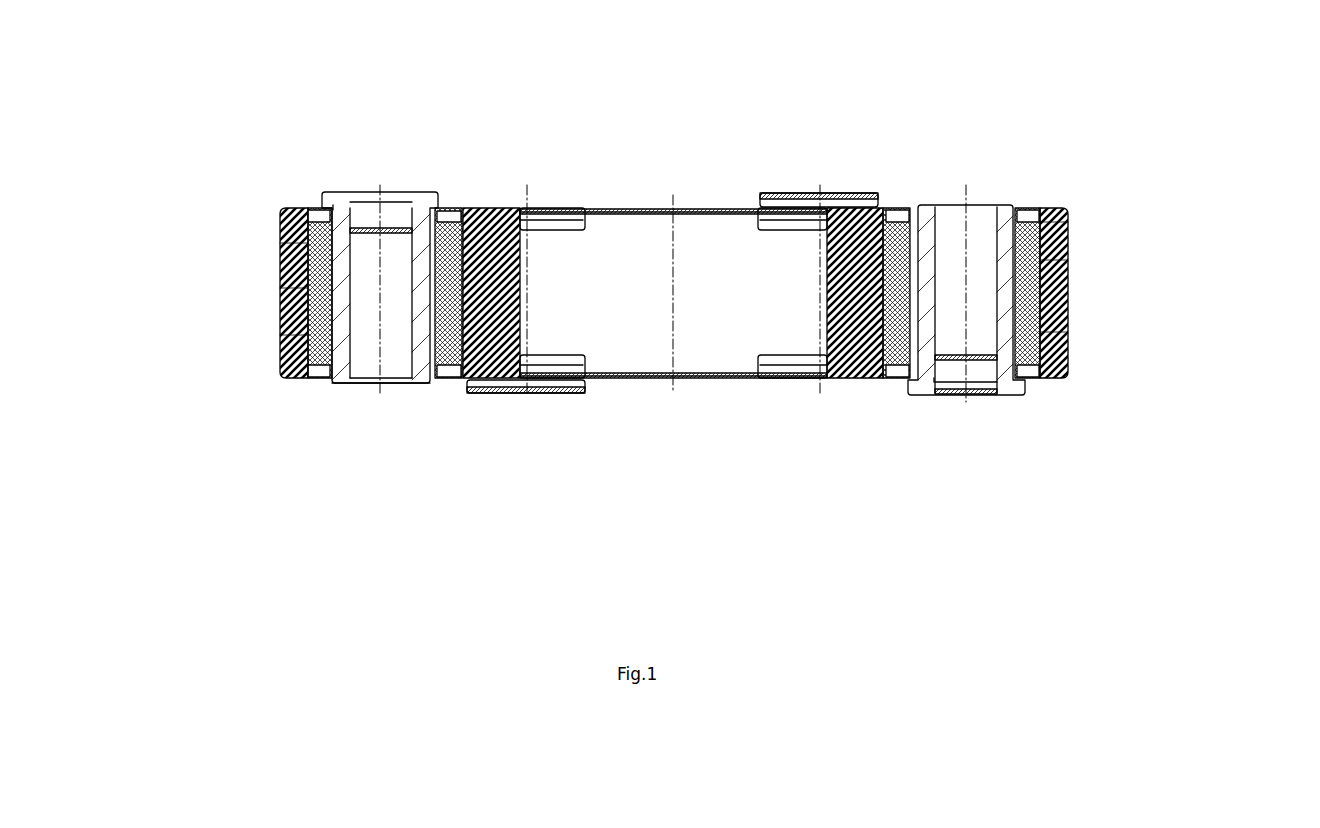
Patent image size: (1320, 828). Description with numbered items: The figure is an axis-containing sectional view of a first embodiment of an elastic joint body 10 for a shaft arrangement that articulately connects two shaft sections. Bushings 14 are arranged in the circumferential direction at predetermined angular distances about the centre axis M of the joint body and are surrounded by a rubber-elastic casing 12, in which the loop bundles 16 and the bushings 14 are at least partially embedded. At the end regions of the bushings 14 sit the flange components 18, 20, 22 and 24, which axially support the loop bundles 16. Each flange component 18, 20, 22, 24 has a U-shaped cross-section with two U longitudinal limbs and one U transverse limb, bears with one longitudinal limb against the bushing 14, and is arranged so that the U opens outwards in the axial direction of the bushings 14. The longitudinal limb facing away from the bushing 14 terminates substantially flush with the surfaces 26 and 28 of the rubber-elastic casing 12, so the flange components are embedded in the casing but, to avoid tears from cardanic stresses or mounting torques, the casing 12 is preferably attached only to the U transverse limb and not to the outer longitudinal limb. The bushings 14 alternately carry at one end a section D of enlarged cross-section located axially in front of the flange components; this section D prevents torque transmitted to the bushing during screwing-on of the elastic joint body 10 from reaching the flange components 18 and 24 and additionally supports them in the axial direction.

The elastic joint body 10 is at (705, 296).
The rubber-elastic casing 12 is at (645, 228).
The bushings 14 is at (674, 306).
The loop bundles 16 is at (671, 254).
The flange component 18 is at (372, 230).
The flange component 20 is at (347, 456).
The flange component 22 is at (992, 238).
The flange component 24 is at (858, 371).
The surface 26 is at (270, 228).
The surface 28 is at (1052, 371).
The section of enlarged cross-section D is at (635, 306).
The centre axis M is at (673, 240).